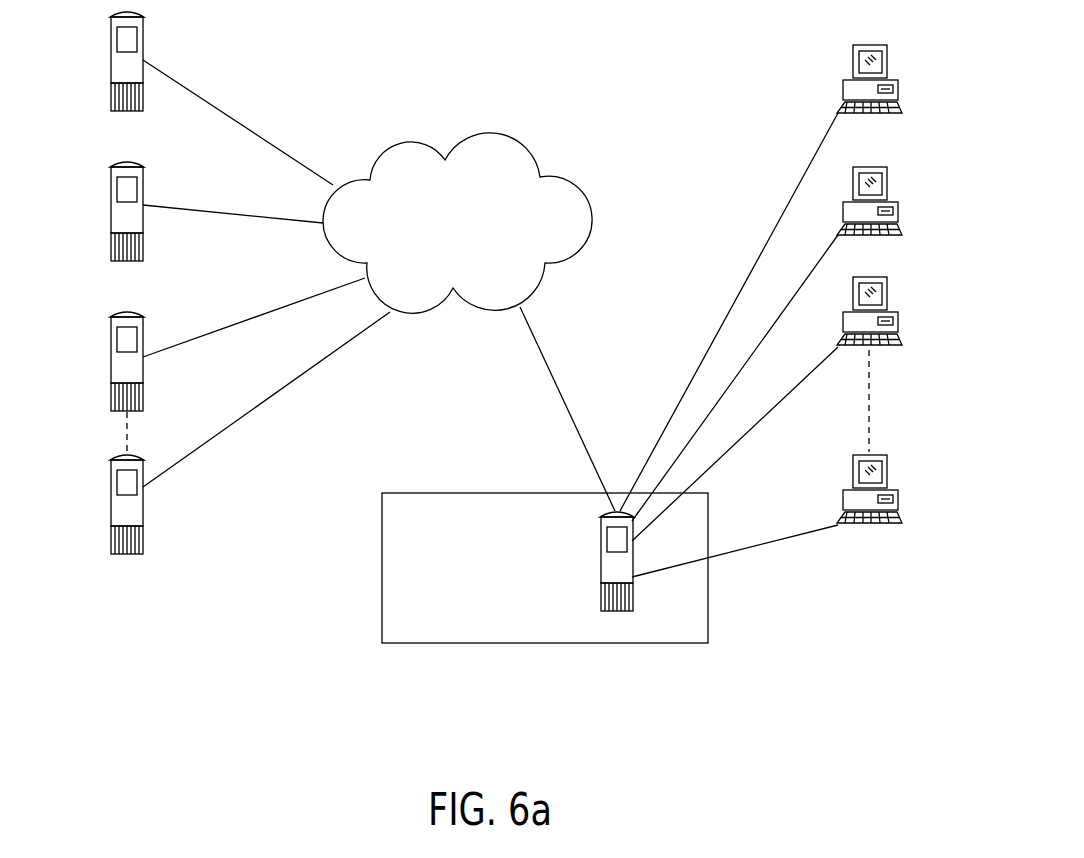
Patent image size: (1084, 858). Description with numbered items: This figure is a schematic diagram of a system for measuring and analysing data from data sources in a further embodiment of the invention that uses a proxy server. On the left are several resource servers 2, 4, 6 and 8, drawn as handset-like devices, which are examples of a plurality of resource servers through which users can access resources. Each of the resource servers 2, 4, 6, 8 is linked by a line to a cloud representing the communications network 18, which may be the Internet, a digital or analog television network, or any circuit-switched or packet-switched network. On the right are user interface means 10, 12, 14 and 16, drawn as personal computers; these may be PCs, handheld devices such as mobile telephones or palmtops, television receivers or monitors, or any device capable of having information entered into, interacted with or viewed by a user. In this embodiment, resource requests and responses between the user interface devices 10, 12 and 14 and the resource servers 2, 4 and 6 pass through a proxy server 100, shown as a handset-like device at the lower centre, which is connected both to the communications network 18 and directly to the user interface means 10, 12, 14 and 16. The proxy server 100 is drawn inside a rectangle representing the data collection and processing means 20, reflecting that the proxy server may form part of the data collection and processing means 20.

The resource server 2 is at (112, 43).
The resource server 4 is at (112, 183).
The resource server 6 is at (112, 330).
The resource server 8 is at (112, 473).
The user interface means 10 is at (887, 62).
The user interface means 12 is at (887, 184).
The user interface means 14 is at (887, 294).
The user interface means 16 is at (887, 472).
The communications network 18 is at (468, 236).
The data collection and processing means 20 is at (382, 567).
The proxy server 100 is at (601, 565).